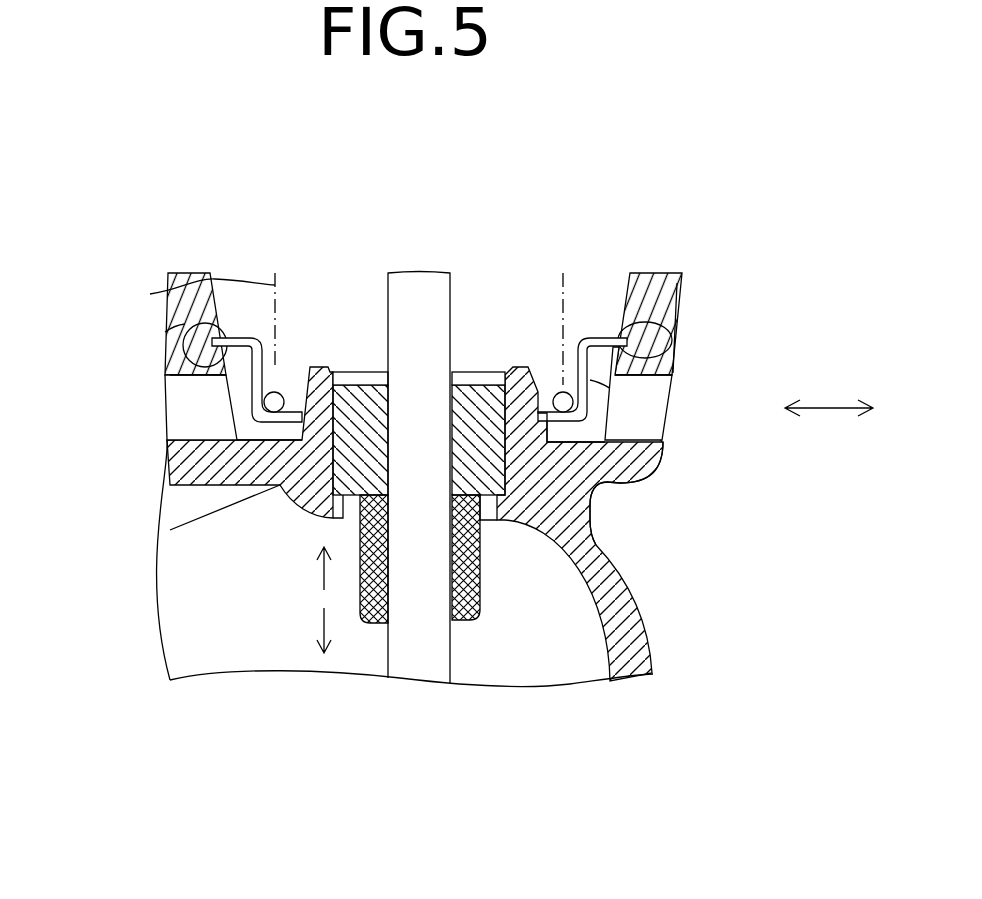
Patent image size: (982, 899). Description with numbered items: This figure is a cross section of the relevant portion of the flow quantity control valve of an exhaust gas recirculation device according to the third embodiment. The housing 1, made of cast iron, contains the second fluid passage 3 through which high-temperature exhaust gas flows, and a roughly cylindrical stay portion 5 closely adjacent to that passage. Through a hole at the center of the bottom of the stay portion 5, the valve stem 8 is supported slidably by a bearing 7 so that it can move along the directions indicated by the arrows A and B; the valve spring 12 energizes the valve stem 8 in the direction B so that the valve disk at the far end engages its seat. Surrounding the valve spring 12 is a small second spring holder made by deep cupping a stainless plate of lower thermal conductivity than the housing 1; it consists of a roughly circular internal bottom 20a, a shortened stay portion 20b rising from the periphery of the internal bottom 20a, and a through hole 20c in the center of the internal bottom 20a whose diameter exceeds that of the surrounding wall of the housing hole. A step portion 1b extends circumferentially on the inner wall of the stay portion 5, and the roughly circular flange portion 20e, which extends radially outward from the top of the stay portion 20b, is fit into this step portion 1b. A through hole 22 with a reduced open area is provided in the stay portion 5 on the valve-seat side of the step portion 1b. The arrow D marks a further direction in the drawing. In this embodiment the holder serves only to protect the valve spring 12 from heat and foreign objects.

The housing 1 is at (627, 613).
The step portion 1b is at (170, 369).
The second fluid passage 3 is at (192, 598).
The stay portion 5 is at (658, 293).
The bearing 7 is at (345, 465).
The valve stem 8 is at (426, 655).
The valve spring 12 is at (160, 293).
The internal bottom 20a is at (640, 486).
The stay portion 20b is at (223, 357).
The through hole 20c is at (593, 503).
The flange portion 20e is at (183, 324).
The through hole 22 is at (178, 418).
The direction A is at (322, 624).
The direction B is at (322, 572).
The direction D is at (833, 410).